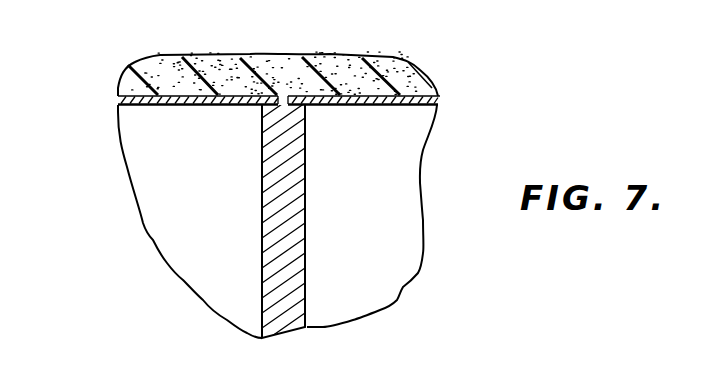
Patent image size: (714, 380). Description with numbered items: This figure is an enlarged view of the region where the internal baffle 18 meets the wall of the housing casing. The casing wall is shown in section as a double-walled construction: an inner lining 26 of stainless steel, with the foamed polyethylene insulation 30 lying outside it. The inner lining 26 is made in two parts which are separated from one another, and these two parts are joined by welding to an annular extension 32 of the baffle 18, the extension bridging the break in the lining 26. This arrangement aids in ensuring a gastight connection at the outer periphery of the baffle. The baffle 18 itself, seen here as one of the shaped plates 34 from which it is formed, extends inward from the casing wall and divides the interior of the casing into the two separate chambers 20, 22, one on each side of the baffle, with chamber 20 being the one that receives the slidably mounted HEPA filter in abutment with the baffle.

The internal baffle 18 is at (315, 172).
The chamber 20 is at (218, 236).
The chamber 22 is at (378, 226).
The inner lining 26 is at (118, 104).
The foamed polyethylene insulation 30 is at (128, 86).
The annular extension 32 is at (283, 97).
The shaped plates 34 is at (262, 147).